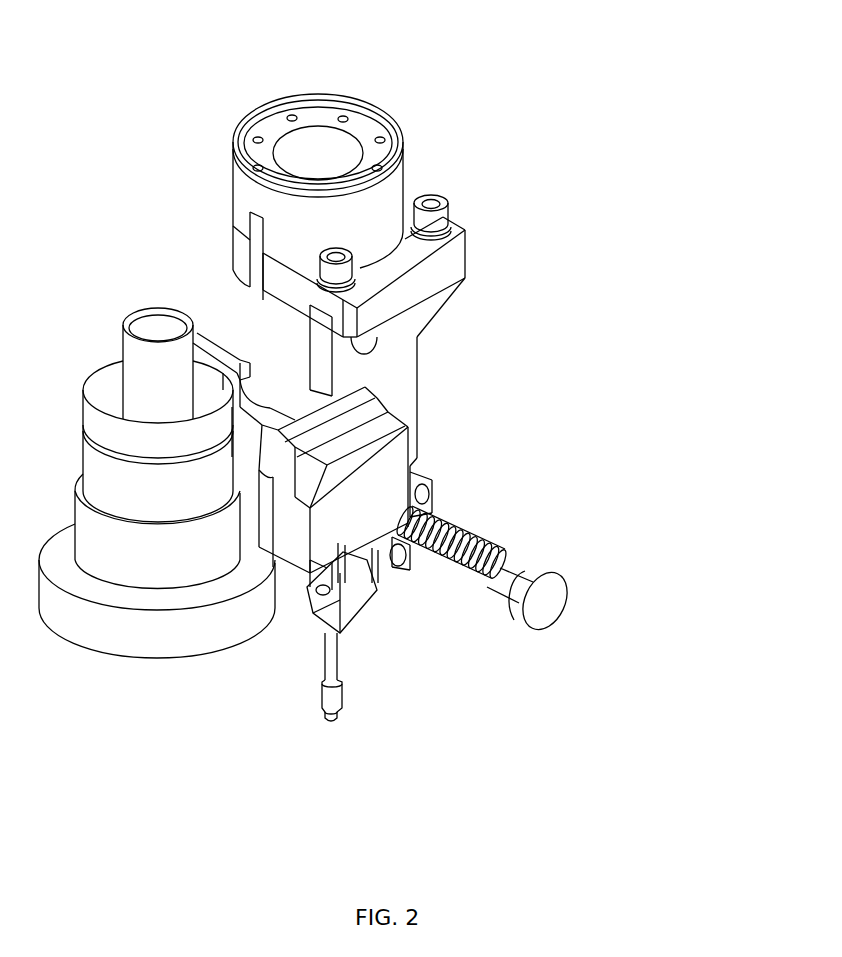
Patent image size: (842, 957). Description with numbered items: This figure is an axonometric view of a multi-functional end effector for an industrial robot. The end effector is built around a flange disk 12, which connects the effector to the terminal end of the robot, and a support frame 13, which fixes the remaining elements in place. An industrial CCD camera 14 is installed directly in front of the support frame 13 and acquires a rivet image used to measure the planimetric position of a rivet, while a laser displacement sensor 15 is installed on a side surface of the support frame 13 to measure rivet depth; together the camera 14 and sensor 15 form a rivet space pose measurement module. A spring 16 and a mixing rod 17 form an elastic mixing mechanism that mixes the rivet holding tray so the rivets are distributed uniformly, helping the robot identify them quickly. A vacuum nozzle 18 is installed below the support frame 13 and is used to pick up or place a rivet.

The flange disk 12 is at (372, 193).
The support frame 13 is at (412, 323).
The industrial CCD camera 14 is at (479, 393).
The laser displacement sensor 15 is at (367, 486).
The spring 16 is at (500, 558).
The mixing rod 17 is at (537, 603).
The vacuum nozzle 18 is at (338, 653).